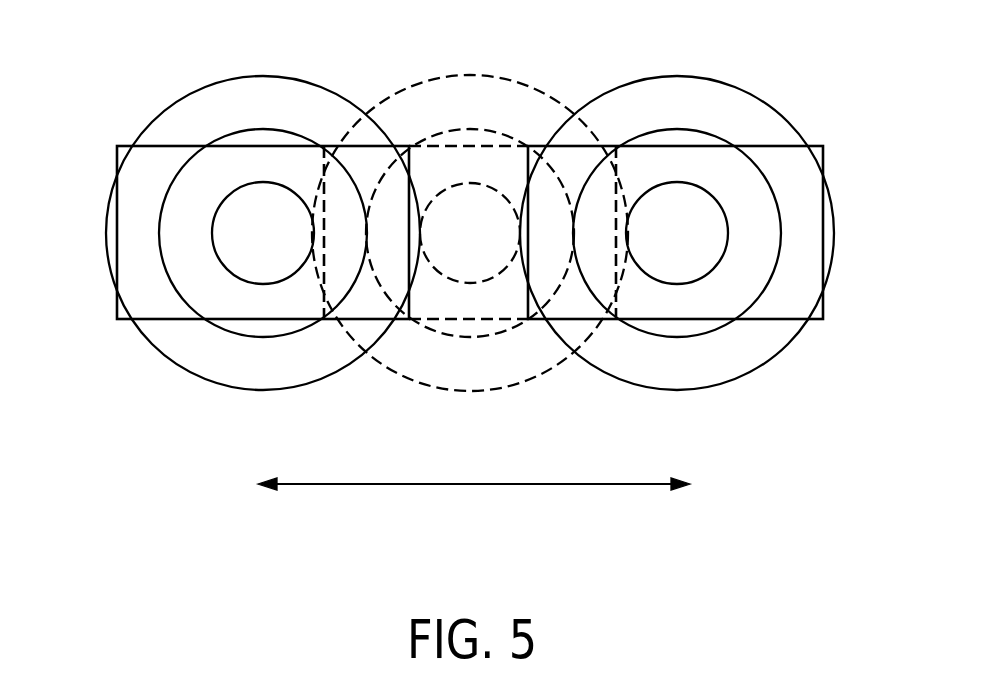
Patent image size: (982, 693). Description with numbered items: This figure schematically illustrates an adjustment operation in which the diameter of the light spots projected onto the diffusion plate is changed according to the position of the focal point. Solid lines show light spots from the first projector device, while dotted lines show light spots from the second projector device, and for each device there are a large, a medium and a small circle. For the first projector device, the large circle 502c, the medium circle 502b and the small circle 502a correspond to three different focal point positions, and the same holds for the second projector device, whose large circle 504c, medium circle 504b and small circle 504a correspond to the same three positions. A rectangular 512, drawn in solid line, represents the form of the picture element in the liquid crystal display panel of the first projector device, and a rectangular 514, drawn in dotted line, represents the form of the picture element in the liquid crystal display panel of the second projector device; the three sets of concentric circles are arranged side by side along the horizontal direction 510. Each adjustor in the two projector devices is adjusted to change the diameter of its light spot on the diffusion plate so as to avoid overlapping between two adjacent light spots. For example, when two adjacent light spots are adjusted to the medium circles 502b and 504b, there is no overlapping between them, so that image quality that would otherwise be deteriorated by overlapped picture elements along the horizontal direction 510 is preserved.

The small circle 502a is at (268, 285).
The medium circle 502b is at (185, 303).
The large circle 502c is at (108, 222).
The small circle 504a is at (488, 184).
The medium circle 504b is at (437, 131).
The large circle 504c is at (402, 92).
The horizontal direction 510 is at (470, 485).
The rectangular 512 is at (182, 146).
The rectangular 514 is at (469, 320).